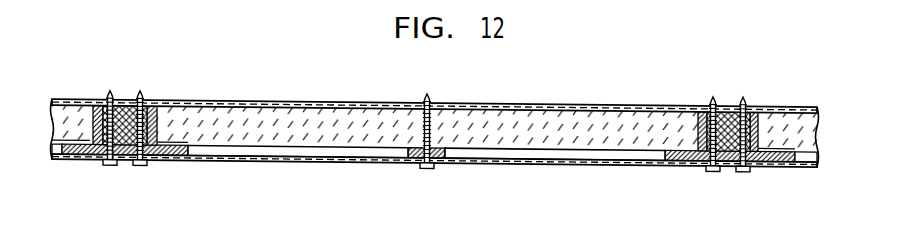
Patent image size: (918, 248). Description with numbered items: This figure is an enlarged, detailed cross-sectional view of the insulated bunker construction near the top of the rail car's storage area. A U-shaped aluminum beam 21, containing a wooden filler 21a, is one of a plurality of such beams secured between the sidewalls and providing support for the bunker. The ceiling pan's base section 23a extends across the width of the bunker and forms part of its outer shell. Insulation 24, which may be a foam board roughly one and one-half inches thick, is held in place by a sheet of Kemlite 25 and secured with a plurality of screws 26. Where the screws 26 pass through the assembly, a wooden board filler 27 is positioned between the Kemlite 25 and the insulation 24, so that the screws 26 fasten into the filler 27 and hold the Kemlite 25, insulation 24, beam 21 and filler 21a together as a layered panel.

The U-shaped aluminum beam 21 is at (175, 102).
The wooden filler 21a is at (125, 102).
The base section 23a is at (572, 107).
The insulation 24 is at (313, 112).
The sheet of Kemlite 25 is at (332, 162).
The screw 26 is at (138, 160).
The wooden board filler 27 is at (85, 160).